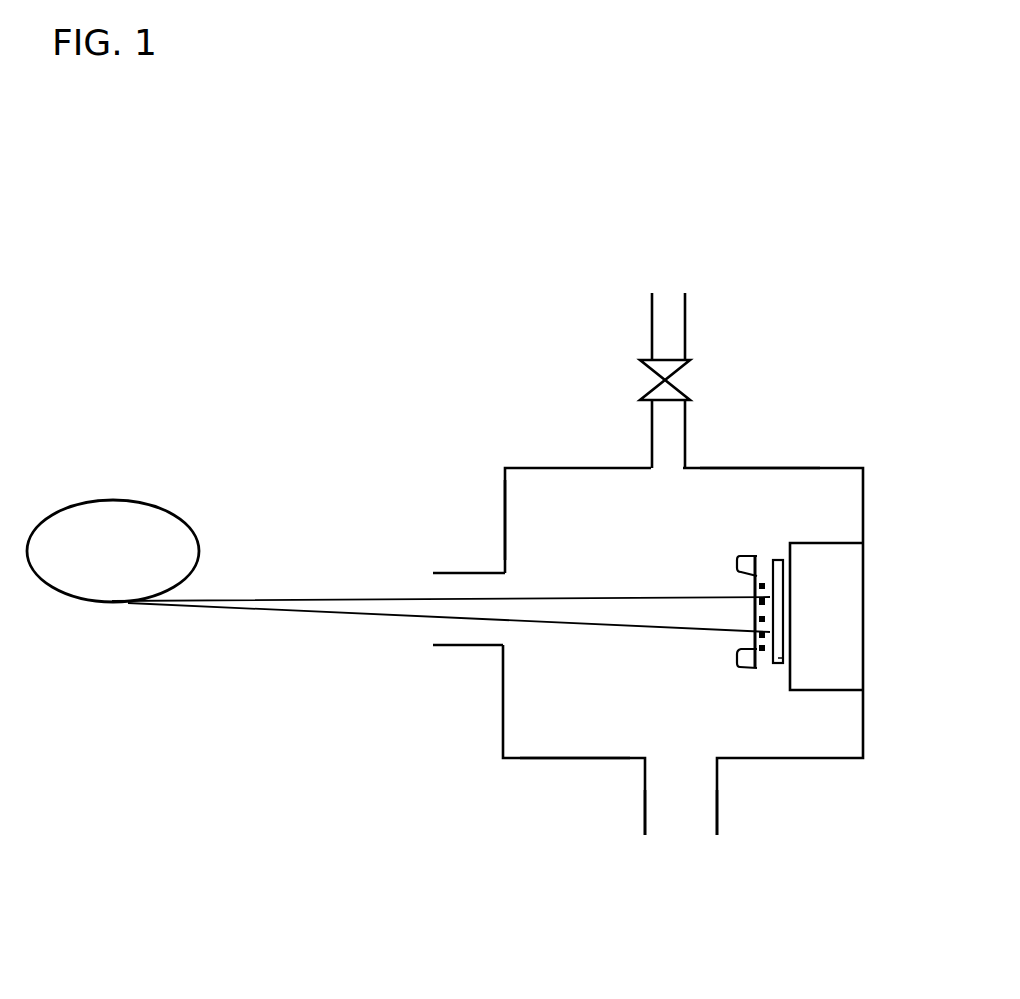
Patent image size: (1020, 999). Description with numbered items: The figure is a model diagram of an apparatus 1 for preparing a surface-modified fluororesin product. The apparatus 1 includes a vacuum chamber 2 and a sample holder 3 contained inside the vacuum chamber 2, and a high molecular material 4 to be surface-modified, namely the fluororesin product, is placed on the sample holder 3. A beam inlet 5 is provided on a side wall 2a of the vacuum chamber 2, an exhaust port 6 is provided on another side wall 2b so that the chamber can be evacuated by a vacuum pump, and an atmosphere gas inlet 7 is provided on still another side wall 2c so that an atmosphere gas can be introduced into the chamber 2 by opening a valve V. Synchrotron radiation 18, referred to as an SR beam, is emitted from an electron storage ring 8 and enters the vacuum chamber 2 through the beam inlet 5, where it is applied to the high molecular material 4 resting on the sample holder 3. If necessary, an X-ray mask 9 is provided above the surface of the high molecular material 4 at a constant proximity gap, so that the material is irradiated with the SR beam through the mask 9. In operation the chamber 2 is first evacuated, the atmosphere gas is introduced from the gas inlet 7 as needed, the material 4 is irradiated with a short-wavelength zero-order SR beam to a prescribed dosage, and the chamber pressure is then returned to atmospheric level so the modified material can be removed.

The apparatus 1 is at (837, 333).
The vacuum chamber 2 is at (840, 468).
The side wall 2a is at (504, 480).
The side wall 2b is at (558, 758).
The side wall 2c is at (754, 468).
The sample holder 3 is at (836, 672).
The high molecular material 4 is at (777, 665).
The beam inlet 5 is at (447, 632).
The exhaust port 6 is at (680, 810).
The atmosphere gas inlet 7 is at (666, 298).
The electron storage ring 8 is at (94, 500).
The X-ray mask 9 is at (755, 668).
The synchrotron radiation 18 is at (302, 598).
The valve V is at (668, 374).